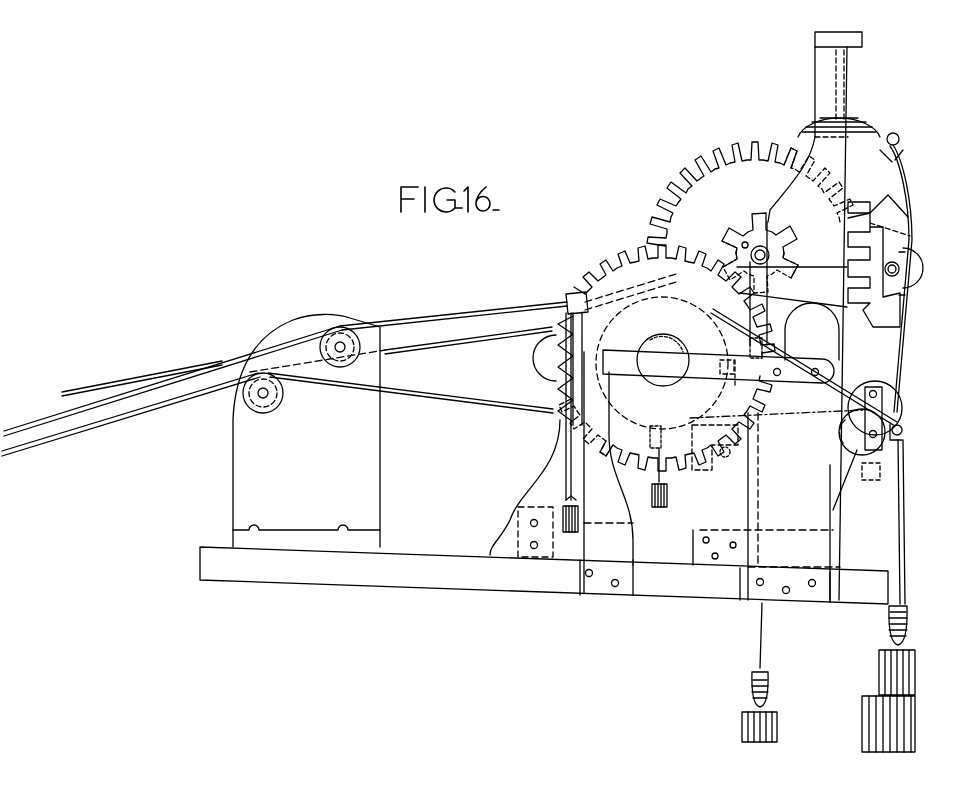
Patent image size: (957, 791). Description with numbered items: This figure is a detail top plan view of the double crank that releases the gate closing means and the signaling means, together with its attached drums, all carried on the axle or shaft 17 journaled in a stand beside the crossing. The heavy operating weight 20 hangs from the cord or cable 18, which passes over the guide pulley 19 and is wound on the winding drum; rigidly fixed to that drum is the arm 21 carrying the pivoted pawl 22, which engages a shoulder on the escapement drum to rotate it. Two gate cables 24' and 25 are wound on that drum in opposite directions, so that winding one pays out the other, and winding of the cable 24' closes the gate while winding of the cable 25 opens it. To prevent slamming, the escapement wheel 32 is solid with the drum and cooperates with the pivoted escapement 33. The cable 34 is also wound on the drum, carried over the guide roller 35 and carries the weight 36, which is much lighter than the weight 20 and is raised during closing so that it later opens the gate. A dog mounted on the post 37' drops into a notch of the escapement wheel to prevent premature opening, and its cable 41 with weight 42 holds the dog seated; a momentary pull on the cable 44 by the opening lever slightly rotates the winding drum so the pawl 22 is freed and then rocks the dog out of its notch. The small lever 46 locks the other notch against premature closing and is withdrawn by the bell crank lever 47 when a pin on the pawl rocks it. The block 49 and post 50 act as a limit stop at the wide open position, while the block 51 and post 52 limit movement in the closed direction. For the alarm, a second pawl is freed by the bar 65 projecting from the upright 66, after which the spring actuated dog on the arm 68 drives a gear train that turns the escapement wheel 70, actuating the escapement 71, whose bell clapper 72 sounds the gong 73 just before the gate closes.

The axle or shaft 17 is at (656, 345).
The cord or cable 18 is at (848, 410).
The guide pulley 19 is at (850, 444).
The operating weight 20 is at (864, 712).
The arm 21 is at (570, 294).
The pawl 22 is at (632, 262).
The cable 24' is at (131, 414).
The cable 25 is at (436, 316).
The escapement wheel 32 is at (690, 270).
The escapement 33 is at (782, 298).
The cable 34 is at (866, 390).
The guide roller 35 is at (904, 434).
The weight 36 is at (914, 670).
The post or upright 37' is at (541, 372).
The cable 41 is at (565, 432).
The weight 42 is at (560, 512).
The cable 44 is at (158, 378).
The small lever 46 is at (655, 418).
The bell crank lever 47 is at (714, 470).
The block 49 is at (722, 346).
The post 50 is at (790, 356).
The block 51 is at (714, 385).
The post 52 is at (596, 462).
The bar 65 is at (822, 276).
The upright or post 66 is at (815, 316).
The arm 68 is at (536, 360).
The escapement wheel 70 is at (727, 165).
The escapement 71 is at (898, 239).
The bell clapper or tappet 72 is at (899, 141).
The gong 73 is at (868, 128).